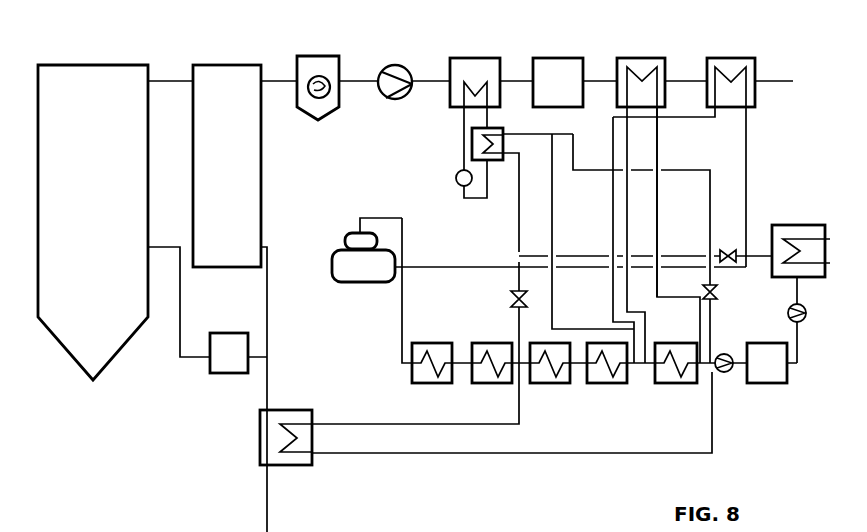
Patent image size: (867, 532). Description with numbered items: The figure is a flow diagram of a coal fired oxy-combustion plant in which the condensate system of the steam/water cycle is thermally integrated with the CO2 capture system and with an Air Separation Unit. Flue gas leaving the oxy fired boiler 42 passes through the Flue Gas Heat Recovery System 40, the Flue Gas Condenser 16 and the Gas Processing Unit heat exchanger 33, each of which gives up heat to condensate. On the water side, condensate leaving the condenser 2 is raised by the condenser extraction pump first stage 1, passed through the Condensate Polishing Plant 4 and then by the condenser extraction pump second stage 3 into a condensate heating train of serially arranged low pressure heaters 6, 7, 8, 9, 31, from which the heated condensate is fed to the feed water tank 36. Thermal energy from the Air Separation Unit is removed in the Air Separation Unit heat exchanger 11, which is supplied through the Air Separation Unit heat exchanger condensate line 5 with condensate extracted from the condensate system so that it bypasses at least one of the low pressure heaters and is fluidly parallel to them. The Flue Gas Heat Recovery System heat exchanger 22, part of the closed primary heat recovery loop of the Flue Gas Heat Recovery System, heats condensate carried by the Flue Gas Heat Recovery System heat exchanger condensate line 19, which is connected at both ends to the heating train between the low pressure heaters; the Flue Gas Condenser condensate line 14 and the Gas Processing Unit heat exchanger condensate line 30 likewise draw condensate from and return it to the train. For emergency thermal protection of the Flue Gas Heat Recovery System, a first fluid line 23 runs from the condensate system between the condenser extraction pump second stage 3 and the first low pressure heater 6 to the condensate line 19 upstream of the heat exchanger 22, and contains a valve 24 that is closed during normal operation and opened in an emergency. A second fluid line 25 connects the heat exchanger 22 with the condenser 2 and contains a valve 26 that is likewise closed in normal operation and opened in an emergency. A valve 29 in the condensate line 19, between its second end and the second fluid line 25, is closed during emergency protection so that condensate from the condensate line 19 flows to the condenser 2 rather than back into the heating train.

The boiler 42 is at (97, 62).
The Flue Gas Heat Recovery System 40 is at (473, 54).
The Flue Gas Heat Recovery System heat exchanger 22 is at (470, 147).
The Flue Gas Heat Recovery System heat exchanger condensate line 19 is at (553, 134).
The Flue Gas Condenser 16 is at (628, 54).
The Flue Gas Condenser condensate line 14 is at (658, 158).
The Gas Processing Unit heat exchanger 33 is at (722, 54).
The Gas Processing Unit heat exchanger condensate line 30 is at (746, 114).
The first fluid line 23 is at (683, 169).
The second fluid line 25 is at (679, 256).
The valve 26 is at (728, 251).
The condenser 2 is at (785, 225).
The valve 24 is at (718, 292).
The condenser extraction pump first stage 1 is at (806, 316).
The Condensate Polishing Plant 4 is at (770, 384).
The condenser extraction pump second stage 3 is at (728, 372).
The Air Separation Unit heat exchanger condensate line 5 is at (712, 425).
The low pressure heater 6 is at (668, 384).
The low pressure heater 7 is at (618, 384).
The low pressure heater 8 is at (560, 384).
The low pressure heater 9 is at (485, 384).
The low pressure heater 31 is at (432, 384).
The valve 29 is at (518, 307).
The feed water tank 36 is at (348, 283).
The Air Separation Unit heat exchanger 11 is at (260, 452).